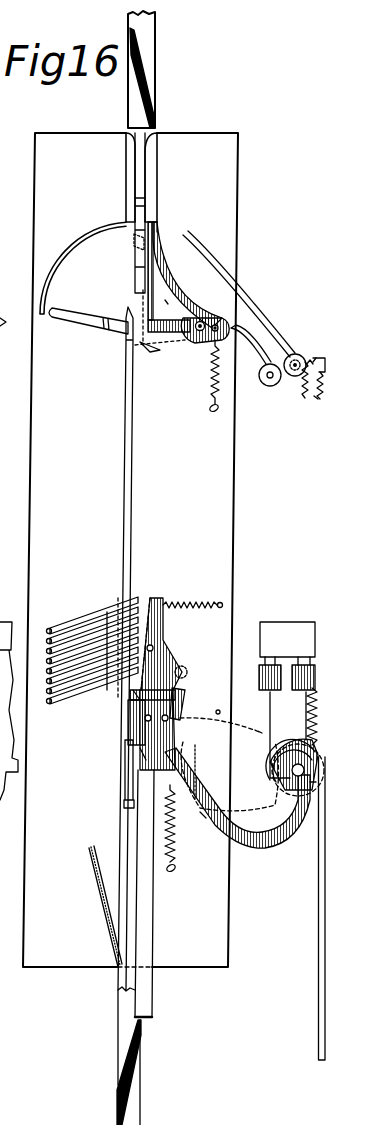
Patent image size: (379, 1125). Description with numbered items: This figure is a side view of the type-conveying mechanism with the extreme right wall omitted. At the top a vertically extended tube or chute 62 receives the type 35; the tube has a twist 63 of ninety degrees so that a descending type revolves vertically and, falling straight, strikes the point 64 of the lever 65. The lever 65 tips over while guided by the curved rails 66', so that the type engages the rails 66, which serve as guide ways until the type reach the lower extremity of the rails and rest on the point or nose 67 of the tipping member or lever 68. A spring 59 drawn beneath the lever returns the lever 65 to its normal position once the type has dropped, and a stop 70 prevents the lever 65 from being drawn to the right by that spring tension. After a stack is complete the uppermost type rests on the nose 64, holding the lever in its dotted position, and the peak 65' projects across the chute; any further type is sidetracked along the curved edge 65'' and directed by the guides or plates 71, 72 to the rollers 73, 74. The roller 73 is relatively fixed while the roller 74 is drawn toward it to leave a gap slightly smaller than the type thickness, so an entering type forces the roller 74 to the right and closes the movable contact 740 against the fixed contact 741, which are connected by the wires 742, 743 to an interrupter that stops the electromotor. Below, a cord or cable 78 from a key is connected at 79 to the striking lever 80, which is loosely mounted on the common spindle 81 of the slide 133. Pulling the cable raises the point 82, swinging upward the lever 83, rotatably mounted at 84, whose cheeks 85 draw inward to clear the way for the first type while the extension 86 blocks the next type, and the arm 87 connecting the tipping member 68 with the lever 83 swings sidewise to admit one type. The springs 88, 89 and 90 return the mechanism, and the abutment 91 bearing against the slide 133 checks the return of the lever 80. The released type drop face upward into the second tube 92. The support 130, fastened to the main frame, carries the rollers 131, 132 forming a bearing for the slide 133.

The type 35 is at (135, 252).
The spring 59 is at (211, 392).
The tube or chute 62 is at (152, 125).
The twist of the tube 63 is at (145, 72).
The point or nose of the lever 64 is at (136, 334).
The lever 65 is at (191, 282).
The peak of the lever 65' is at (188, 220).
The curved edge of the lever 65'' is at (227, 286).
The rails 66 is at (105, 649).
The curved rails 66' is at (83, 254).
The point or nose of the tipping member 67 is at (133, 690).
The tipping member or lever 68 is at (152, 668).
The stop 70 is at (165, 300).
The guide or plate 71 is at (236, 326).
The guide or plate 72 is at (308, 345).
The roller 73 is at (271, 386).
The roller 74 is at (318, 348).
The cord or cable 78 is at (318, 921).
The connection of the cable to the striking lever 79 is at (310, 782).
The striking lever 80 is at (266, 846).
The common spindle 81 is at (287, 769).
The point of the striking lever 82 is at (200, 812).
The lever 83 is at (143, 756).
The pivot of lever 83 84 is at (137, 744).
The cheeks of the lever 85 is at (128, 735).
The extension 86 is at (186, 672).
The arm 87 is at (183, 703).
The spring 88 is at (181, 607).
The spring 89 is at (167, 808).
The spring 90 is at (327, 716).
The abutment 91 is at (288, 735).
The vertically extended tube 92 is at (128, 1027).
The support 130 is at (272, 630).
The roller 131 is at (262, 690).
The roller 132 is at (300, 690).
The slide 133 is at (308, 702).
The movable contact 740 is at (316, 358).
The fixed contact 741 is at (324, 372).
The wire 742 is at (304, 398).
The wire 743 is at (316, 398).